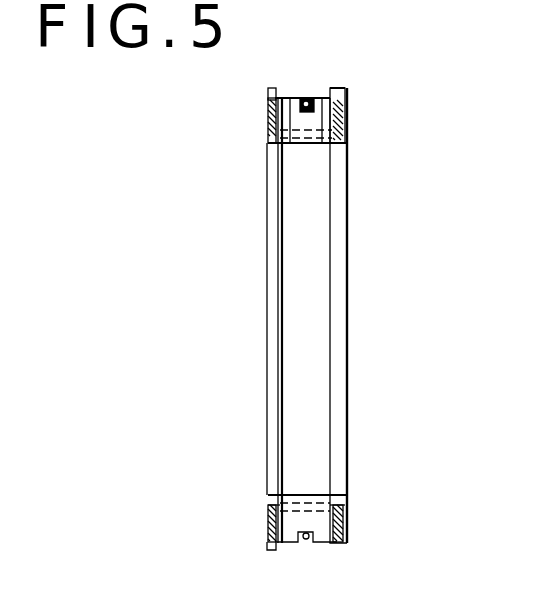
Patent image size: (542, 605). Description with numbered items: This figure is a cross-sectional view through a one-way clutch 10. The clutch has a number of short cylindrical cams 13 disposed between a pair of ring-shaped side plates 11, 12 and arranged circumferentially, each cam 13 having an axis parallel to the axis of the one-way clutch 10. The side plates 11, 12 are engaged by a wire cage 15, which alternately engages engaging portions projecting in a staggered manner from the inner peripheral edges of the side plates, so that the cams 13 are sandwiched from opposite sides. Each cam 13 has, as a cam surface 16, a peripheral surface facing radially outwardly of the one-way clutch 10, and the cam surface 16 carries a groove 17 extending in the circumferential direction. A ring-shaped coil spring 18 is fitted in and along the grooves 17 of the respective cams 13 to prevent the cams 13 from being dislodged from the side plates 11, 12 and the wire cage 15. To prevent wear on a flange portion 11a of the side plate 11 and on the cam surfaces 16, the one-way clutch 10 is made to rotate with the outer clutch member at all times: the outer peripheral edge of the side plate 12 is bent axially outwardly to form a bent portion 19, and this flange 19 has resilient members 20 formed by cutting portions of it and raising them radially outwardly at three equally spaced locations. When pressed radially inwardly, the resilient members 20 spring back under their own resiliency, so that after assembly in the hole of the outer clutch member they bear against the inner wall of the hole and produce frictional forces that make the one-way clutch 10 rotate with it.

The one-way clutch 10 is at (360, 315).
The side plate 11 is at (268, 114).
The flange portion 11a is at (270, 88).
The side plate 12 is at (346, 124).
The cam 13 is at (322, 99).
The wire cage 15 is at (270, 140).
The cam surface 16 is at (290, 98).
The groove 17 is at (306, 98).
The coil spring 18 is at (300, 142).
The bent portion 19 is at (346, 111).
The resilient member 20 is at (334, 88).